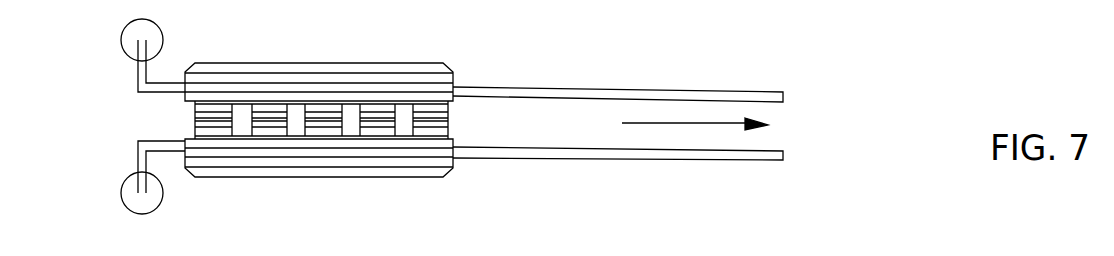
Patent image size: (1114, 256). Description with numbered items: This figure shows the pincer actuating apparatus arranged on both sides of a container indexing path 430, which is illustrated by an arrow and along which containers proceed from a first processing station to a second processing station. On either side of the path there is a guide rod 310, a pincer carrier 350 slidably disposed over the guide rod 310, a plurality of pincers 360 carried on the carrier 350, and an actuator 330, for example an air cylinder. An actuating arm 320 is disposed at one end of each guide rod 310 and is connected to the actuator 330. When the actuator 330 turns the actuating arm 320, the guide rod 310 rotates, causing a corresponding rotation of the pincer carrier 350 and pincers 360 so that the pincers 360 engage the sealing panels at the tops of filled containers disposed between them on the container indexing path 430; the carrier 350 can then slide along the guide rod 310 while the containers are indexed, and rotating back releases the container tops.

The guide rod 310 is at (575, 87).
The actuating arm 320 is at (138, 68).
The actuator 330 is at (157, 35).
The pincer carrier 350 is at (367, 63).
The pincers 360 is at (450, 110).
The container indexing path 430 is at (683, 123).